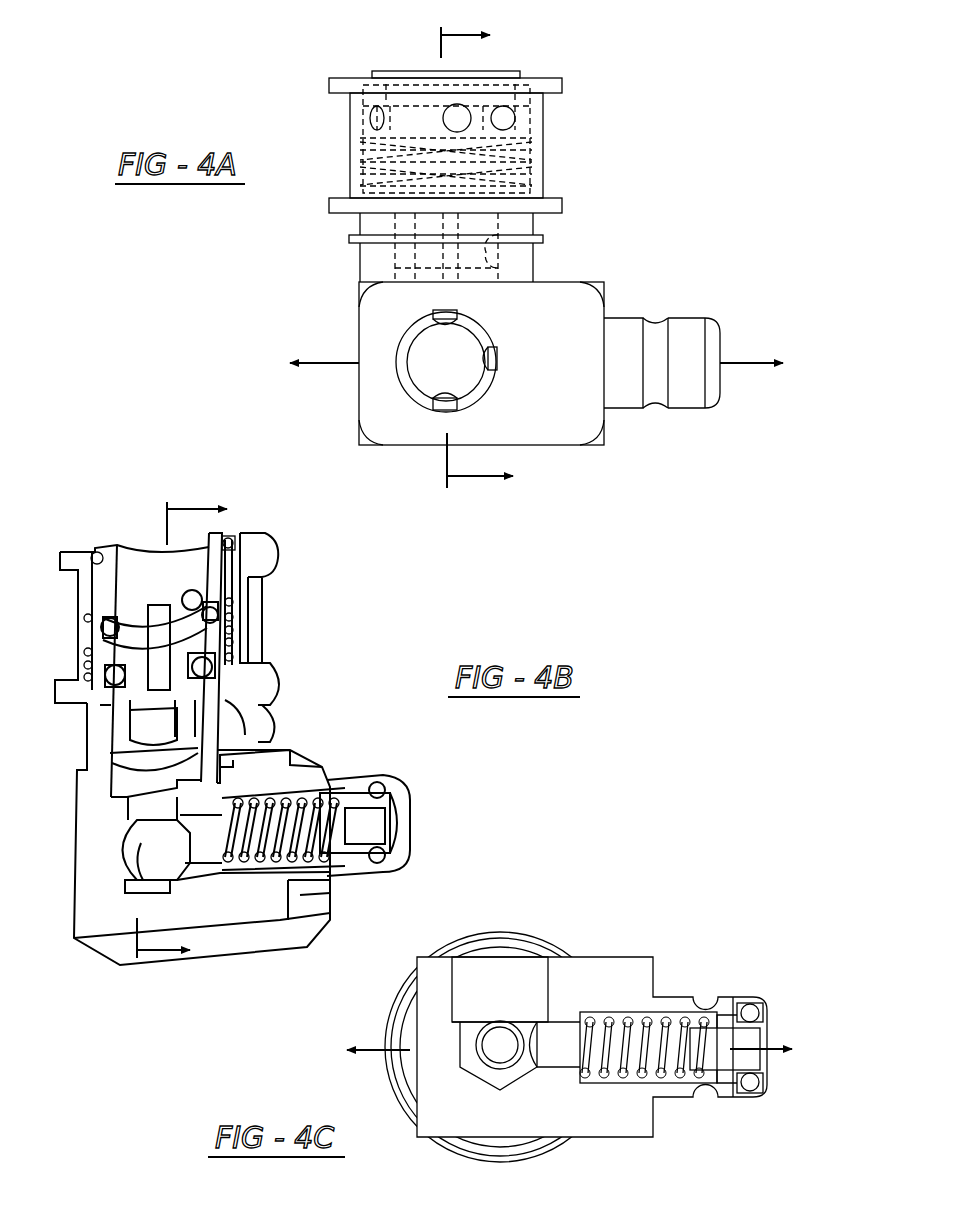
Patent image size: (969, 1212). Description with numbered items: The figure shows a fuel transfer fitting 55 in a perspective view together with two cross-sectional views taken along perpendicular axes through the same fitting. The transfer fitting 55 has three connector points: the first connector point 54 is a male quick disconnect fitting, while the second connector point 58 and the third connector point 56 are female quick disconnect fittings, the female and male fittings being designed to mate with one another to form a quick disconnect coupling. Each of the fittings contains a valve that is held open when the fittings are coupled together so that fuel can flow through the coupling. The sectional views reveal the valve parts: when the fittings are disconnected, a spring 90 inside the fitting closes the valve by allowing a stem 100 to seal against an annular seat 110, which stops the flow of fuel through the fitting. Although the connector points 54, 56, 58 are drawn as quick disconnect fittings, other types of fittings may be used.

In FIG. 4A, the first connector point 54 is at (632, 377).
In FIG. 4B, the first connector point 54 is at (409, 822).
In FIG. 4C, the first connector point 54 is at (768, 1072).
In FIG. 4A, the transfer fitting 55 is at (622, 258).
In FIG. 4B, the transfer fitting 55 is at (362, 648).
In FIG. 4C, the transfer fitting 55 is at (700, 950).
In FIG. 4B, the third connector point 56 is at (137, 868).
In FIG. 4C, the third connector point 56 is at (505, 980).
In FIG. 4A, the second connector point 58 is at (354, 85).
In FIG. 4B, the second connector point 58 is at (155, 572).
In FIG. 4C, the second connector point 58 is at (401, 1012).
In FIG. 4A, the spring 90 is at (383, 163).
In FIG. 4B, the spring 90 is at (307, 823).
In FIG. 4C, the spring 90 is at (643, 1073).
In FIG. 4B, the stem 100 is at (158, 690).
In FIG. 4C, the stem 100 is at (728, 1060).
In FIG. 4B, the annular seat 110 is at (202, 663).
In FIG. 4C, the annular seat 110 is at (750, 1012).